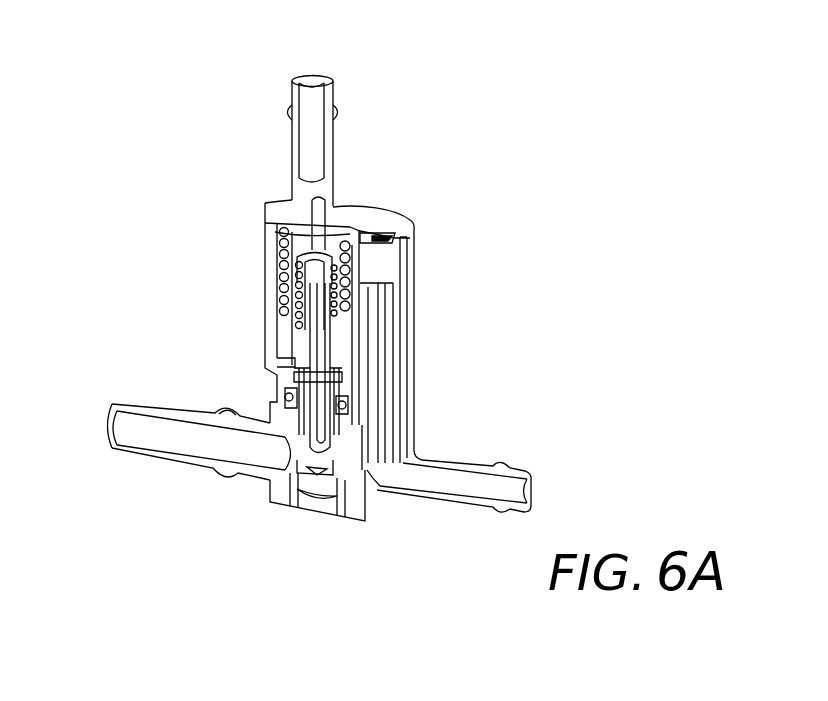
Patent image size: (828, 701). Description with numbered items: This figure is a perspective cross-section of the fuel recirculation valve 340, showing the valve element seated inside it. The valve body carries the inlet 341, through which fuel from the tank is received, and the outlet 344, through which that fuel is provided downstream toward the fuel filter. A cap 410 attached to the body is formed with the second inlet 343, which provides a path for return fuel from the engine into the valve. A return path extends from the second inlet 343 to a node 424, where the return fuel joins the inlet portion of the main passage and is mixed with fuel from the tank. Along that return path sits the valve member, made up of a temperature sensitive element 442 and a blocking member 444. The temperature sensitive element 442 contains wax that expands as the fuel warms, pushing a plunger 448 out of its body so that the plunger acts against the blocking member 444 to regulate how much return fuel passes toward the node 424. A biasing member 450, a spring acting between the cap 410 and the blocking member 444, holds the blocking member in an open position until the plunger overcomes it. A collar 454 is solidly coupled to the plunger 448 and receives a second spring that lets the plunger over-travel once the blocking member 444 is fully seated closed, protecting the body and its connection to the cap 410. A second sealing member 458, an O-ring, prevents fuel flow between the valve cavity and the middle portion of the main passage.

The fuel recirculation valve 340 is at (545, 218).
The second inlet 343 is at (323, 80).
The cap 410 is at (355, 212).
The biasing member 450 is at (395, 236).
The blocking member 444 is at (350, 325).
The plunger 448 is at (318, 413).
The collar 454 is at (300, 318).
The second sealing member 458 is at (287, 394).
The temperature sensitive element 442 is at (316, 482).
The node 424 is at (385, 480).
The outlet 344 is at (110, 425).
The inlet 341 is at (545, 492).